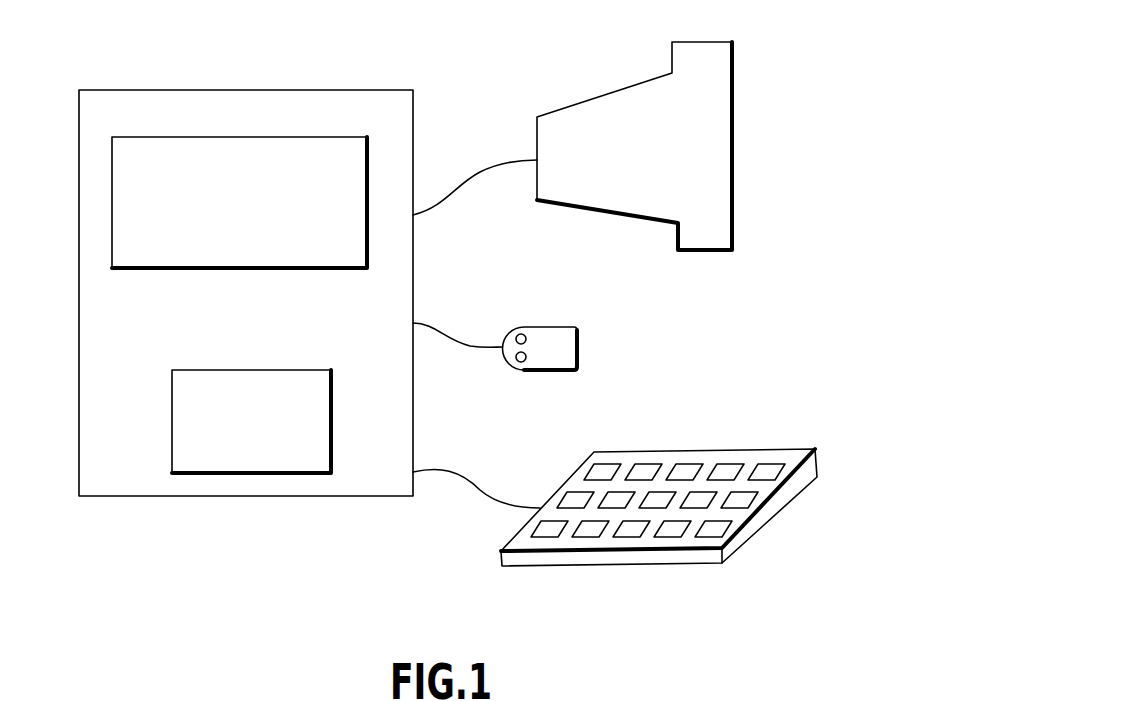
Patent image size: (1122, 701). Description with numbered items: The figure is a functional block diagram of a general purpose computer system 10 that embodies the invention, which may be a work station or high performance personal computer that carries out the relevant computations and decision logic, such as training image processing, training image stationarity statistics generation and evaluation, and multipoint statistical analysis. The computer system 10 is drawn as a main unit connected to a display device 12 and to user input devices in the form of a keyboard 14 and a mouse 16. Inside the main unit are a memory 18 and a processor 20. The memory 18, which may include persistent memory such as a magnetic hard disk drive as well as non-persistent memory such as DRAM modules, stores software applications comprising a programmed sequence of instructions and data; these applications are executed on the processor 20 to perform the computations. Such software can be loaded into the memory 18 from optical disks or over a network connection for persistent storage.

The computer system 10 is at (214, 615).
The display device 12 is at (603, 95).
The keyboard 14 is at (700, 450).
The mouse 16 is at (548, 327).
The memory 18 is at (237, 137).
The processor 20 is at (253, 473).